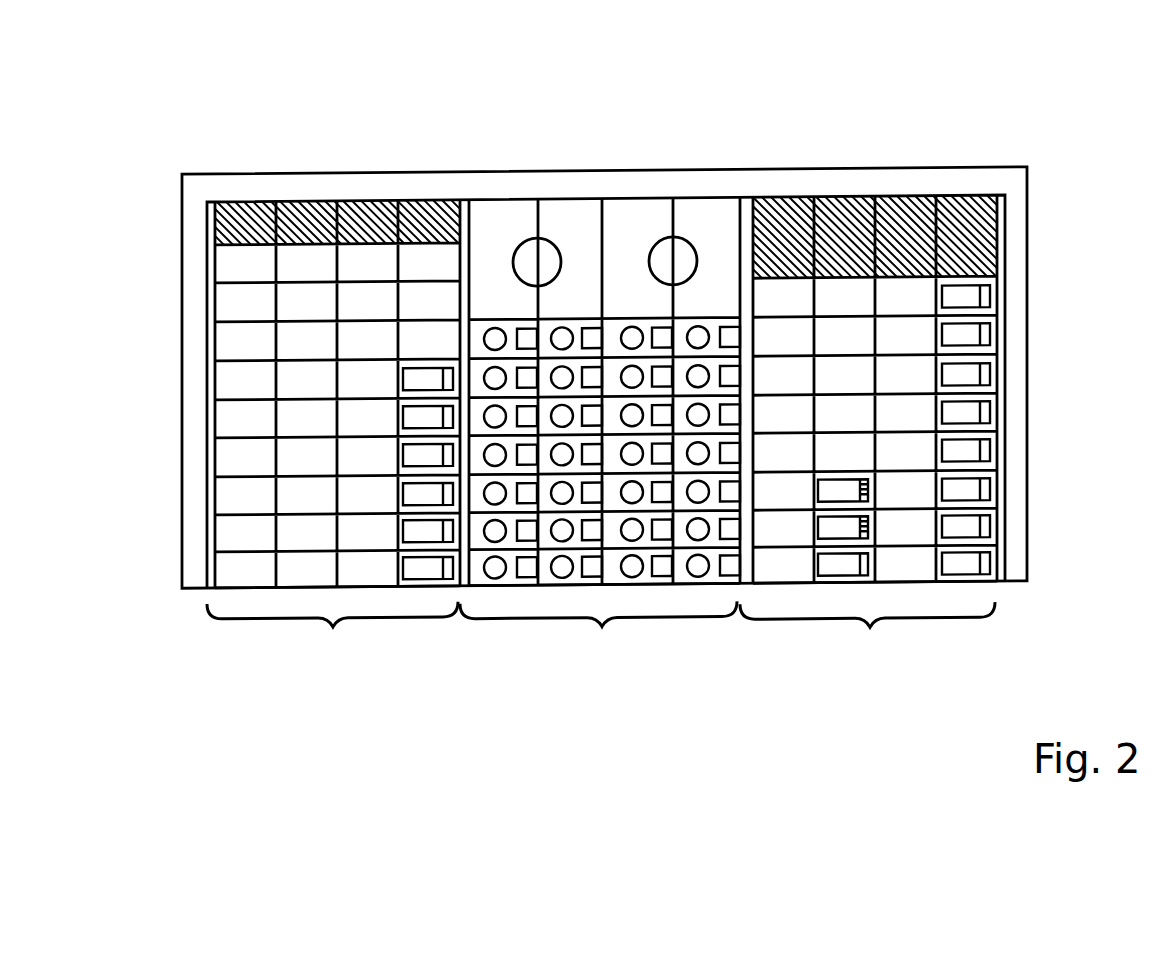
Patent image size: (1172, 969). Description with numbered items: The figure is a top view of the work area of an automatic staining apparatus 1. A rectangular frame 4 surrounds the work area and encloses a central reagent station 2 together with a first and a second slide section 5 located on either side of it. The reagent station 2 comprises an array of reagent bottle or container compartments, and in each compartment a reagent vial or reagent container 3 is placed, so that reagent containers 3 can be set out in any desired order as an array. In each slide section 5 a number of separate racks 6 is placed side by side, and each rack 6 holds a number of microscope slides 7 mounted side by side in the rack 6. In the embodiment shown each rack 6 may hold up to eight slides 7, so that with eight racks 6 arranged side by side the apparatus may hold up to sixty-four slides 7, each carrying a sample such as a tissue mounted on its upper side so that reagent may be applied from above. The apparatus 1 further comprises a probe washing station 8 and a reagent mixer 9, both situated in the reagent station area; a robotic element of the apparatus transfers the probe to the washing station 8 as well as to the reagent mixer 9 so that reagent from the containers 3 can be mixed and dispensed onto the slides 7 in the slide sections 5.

The automatic staining apparatus 1 is at (250, 118).
The reagent station 2 is at (605, 632).
The reagent container 3 is at (573, 331).
The rectangular frame 4 is at (333, 175).
The slide sections 5 is at (335, 629).
The rack 6 is at (435, 267).
The microscope slide 7 is at (1088, 515).
The probe washing station 8 is at (537, 248).
The reagent mixer 9 is at (673, 249).